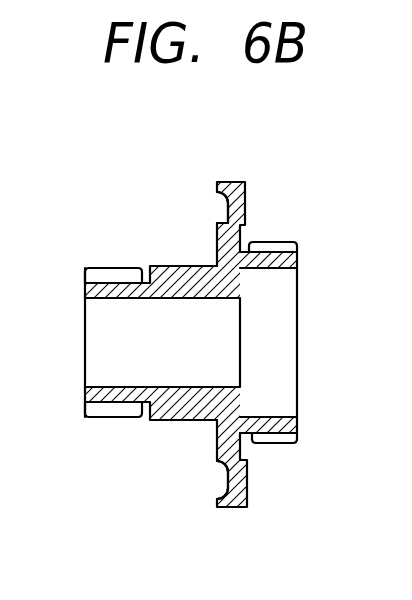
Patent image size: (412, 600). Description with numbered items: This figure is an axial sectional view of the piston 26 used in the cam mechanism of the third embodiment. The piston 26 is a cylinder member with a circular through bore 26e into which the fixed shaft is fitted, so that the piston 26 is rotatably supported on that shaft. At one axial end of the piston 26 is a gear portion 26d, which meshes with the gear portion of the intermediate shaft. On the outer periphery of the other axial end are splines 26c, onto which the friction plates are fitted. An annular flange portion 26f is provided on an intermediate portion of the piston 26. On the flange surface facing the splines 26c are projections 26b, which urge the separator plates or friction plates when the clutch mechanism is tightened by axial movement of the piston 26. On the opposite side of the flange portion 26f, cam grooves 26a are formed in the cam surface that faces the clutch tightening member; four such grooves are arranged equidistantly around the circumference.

The piston 26 is at (280, 205).
The cam grooves 26a is at (226, 203).
The projections 26b is at (247, 487).
The splines 26c is at (283, 440).
The gear portion 26d is at (112, 413).
The circular through bore 26e is at (208, 298).
The annular flange portion 26f is at (231, 182).